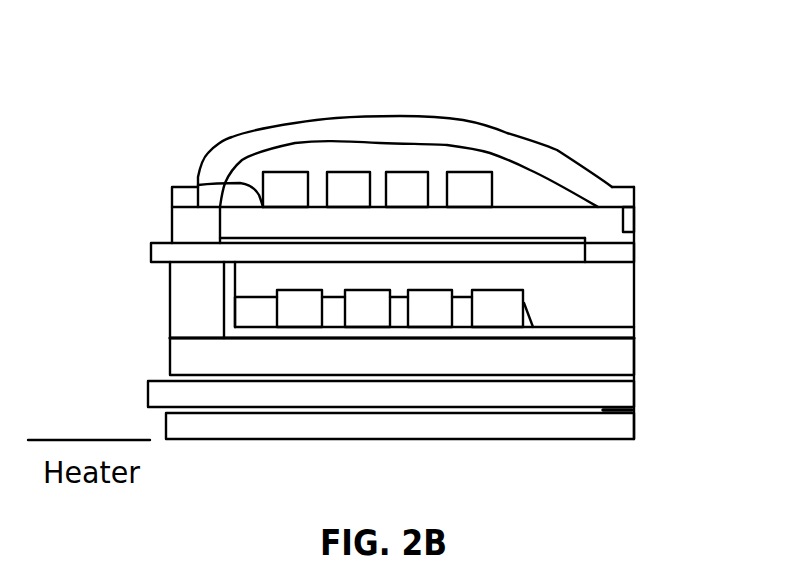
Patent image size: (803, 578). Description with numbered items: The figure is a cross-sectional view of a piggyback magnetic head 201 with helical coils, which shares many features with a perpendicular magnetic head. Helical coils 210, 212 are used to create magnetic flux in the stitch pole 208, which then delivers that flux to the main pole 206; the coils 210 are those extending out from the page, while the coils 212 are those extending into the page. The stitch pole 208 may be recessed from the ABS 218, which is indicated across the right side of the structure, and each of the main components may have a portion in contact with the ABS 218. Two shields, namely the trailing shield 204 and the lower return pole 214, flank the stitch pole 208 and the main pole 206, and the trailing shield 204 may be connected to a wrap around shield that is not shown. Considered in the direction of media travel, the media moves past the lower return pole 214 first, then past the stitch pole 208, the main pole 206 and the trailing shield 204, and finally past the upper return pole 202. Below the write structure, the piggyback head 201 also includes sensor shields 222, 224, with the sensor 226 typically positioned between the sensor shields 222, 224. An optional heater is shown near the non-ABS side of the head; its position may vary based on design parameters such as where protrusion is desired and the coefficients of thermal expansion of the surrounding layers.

The piggyback magnetic head 201 is at (253, 95).
The upper return pole 202 is at (557, 150).
The trailing shield 204 is at (634, 222).
The main pole 206 is at (634, 245).
The stitch pole 208 is at (575, 263).
The helical coils 210 is at (197, 183).
The helical coils 212 is at (283, 292).
The lower return pole 214 is at (443, 365).
The ABS 218 is at (636, 343).
The sensor shield 222 is at (147, 393).
The sensor shield 224 is at (166, 425).
The sensor 226 is at (627, 408).